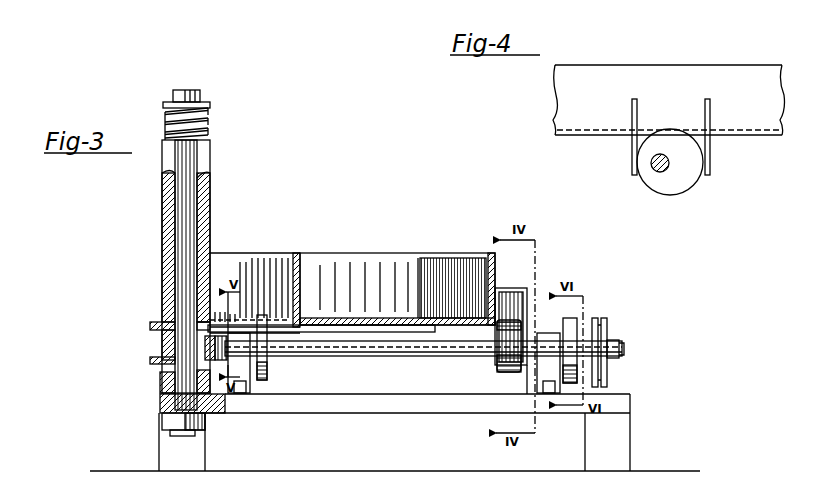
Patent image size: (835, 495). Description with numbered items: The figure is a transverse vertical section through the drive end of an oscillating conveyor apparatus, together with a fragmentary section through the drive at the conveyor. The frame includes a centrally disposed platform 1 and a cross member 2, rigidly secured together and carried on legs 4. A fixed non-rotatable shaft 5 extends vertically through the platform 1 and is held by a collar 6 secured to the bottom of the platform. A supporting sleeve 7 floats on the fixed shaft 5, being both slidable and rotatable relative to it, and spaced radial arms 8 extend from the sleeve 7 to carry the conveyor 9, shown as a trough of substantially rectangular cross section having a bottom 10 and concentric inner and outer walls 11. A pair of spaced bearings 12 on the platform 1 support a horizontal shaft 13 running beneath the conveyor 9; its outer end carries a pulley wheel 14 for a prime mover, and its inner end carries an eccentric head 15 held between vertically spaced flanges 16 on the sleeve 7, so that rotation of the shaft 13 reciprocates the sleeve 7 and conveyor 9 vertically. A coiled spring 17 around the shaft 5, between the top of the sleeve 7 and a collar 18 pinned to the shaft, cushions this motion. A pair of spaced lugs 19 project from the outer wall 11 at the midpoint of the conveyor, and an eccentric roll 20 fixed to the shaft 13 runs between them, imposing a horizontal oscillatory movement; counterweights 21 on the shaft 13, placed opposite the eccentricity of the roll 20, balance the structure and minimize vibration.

In FIG. 3, the platform 1 is at (372, 404).
In FIG. 3, the cross member 2 is at (162, 378).
In FIG. 3, the legs 4 is at (170, 453).
In FIG. 3, the fixed non-rotatable shaft 5 is at (186, 212).
In FIG. 3, the collar 6 is at (176, 425).
In FIG. 3, the supporting sleeve 7 is at (170, 240).
In FIG. 3, the radial arms 8 is at (350, 328).
In FIG. 3, the conveyor 9 is at (393, 252).
In FIG. 3, the bottom 10 is at (418, 316).
In FIG. 3, the inner and outer walls 11 is at (300, 268).
In FIG. 4, the inner and outer walls 11 is at (615, 78).
In FIG. 3, the bearings 12 is at (245, 382).
In FIG. 3, the shaft 13 is at (380, 357).
In FIG. 4, the shaft 13 is at (662, 172).
In FIG. 3, the pulley wheel 14 is at (600, 329).
In FIG. 3, the eccentric head 15 is at (214, 347).
In FIG. 3, the flanges 16 is at (160, 326).
In FIG. 3, the coiled spring 17 is at (208, 123).
In FIG. 3, the collar 18 is at (205, 104).
In FIG. 3, the lugs 19 is at (510, 297).
In FIG. 4, the lugs 19 is at (705, 108).
In FIG. 3, the eccentric roll 20 is at (503, 374).
In FIG. 4, the eccentric roll 20 is at (688, 178).
In FIG. 3, the counterweights 21 is at (268, 370).